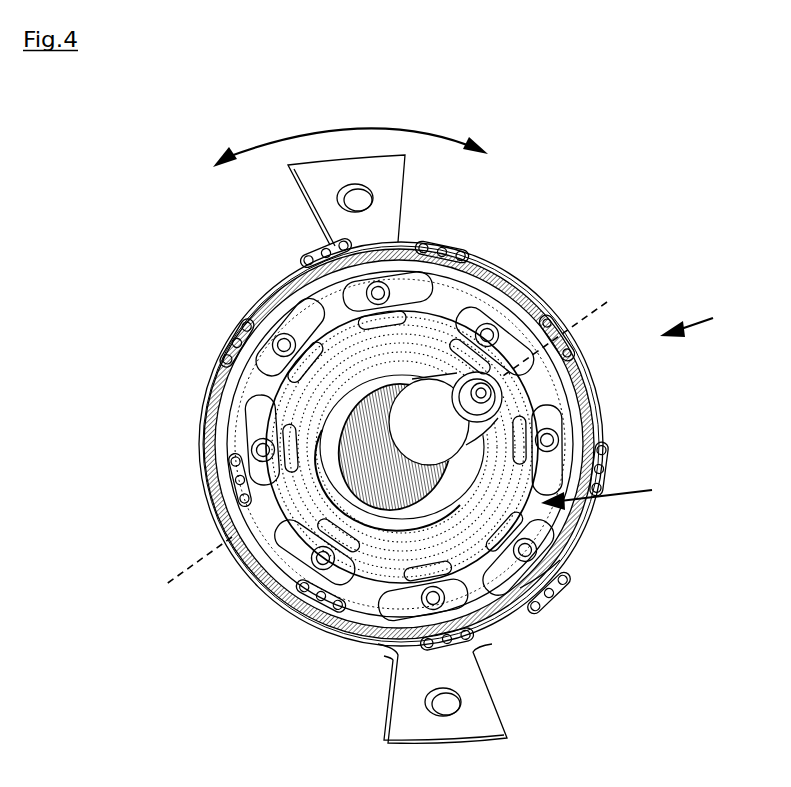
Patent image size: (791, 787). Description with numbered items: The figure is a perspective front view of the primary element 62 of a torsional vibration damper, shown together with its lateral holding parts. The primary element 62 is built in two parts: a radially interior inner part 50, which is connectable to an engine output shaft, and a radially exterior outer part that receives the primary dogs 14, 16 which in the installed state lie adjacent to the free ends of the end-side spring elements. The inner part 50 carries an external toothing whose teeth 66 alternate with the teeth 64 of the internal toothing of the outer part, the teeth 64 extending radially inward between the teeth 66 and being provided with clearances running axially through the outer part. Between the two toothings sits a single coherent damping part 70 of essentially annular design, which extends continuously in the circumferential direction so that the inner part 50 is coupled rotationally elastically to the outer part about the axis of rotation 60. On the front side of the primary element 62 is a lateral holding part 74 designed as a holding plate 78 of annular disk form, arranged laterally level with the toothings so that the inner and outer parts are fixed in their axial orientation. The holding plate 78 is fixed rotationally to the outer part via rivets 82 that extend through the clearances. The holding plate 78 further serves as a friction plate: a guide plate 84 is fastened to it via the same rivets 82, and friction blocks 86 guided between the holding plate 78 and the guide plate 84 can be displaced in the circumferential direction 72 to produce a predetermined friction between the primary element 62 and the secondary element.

The primary dog 14 is at (392, 197).
The primary dog 16 is at (487, 717).
The inner part 50 is at (410, 542).
The axis of rotation 60 is at (567, 332).
The primary element 62 is at (699, 321).
The teeth of the internal toothing 64 is at (380, 317).
The teeth of the external toothing 66 is at (297, 488).
The damping part 70 is at (453, 345).
The circumferential direction 72 is at (358, 130).
The lateral holding part 74 is at (611, 493).
The holding plate 78 is at (487, 583).
The rivets 82 is at (548, 440).
The guide plate 84 is at (567, 542).
The friction blocks 86 is at (232, 345).